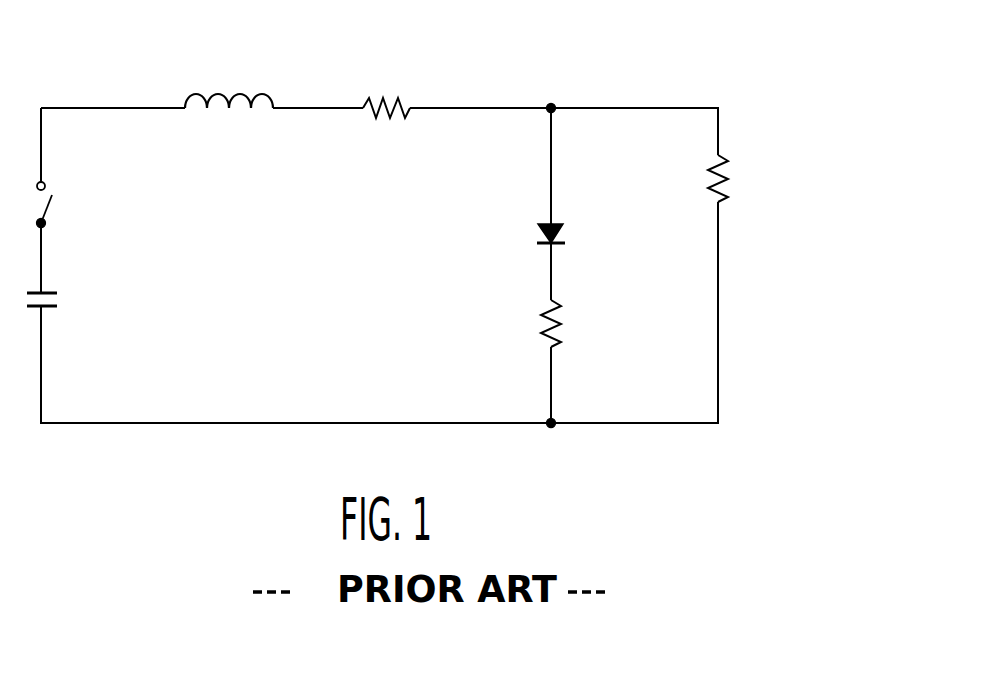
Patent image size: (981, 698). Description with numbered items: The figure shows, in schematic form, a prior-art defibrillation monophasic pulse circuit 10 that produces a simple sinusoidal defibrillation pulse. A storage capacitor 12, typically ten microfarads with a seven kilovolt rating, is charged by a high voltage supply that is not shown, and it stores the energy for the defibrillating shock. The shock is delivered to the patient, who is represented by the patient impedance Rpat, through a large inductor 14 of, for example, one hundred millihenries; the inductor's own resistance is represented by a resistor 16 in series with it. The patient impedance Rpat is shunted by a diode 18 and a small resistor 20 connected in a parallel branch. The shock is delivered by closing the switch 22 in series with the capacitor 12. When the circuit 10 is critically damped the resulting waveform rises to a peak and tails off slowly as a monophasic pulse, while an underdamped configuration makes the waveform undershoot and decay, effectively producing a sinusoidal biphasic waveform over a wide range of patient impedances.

The defibrillation monophasic pulse circuit 10 is at (741, 57).
The storage capacitor 12 is at (56, 292).
The large inductor 14 is at (217, 93).
The resistor 16 is at (403, 104).
The diode 18 is at (565, 242).
The small resistor 20 is at (556, 340).
The switch 22 is at (47, 212).
The patient impedance Rpat is at (745, 178).